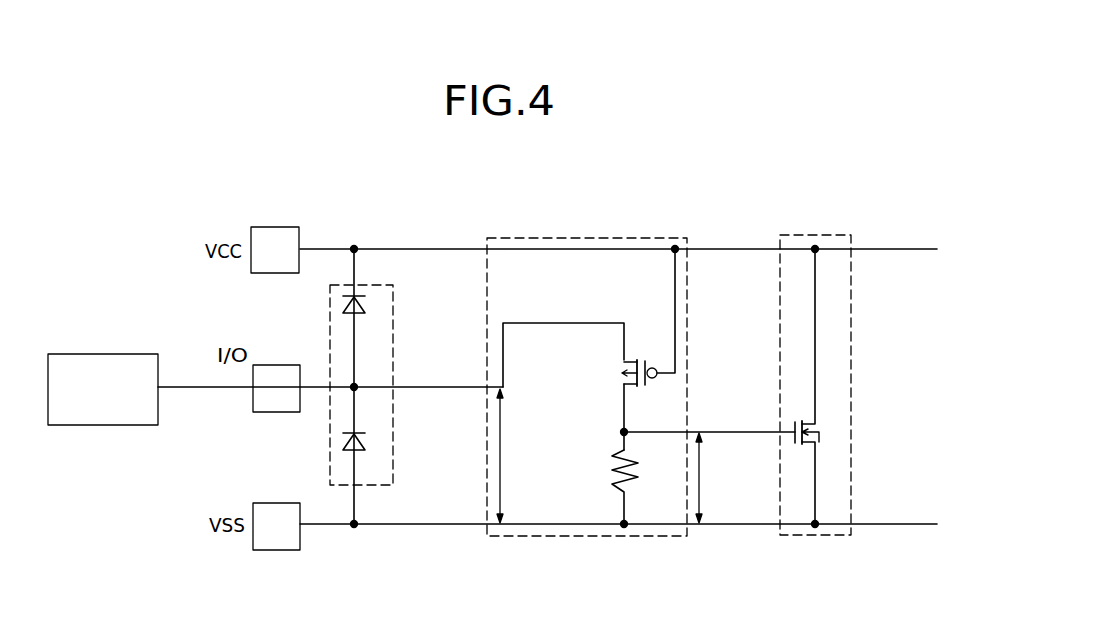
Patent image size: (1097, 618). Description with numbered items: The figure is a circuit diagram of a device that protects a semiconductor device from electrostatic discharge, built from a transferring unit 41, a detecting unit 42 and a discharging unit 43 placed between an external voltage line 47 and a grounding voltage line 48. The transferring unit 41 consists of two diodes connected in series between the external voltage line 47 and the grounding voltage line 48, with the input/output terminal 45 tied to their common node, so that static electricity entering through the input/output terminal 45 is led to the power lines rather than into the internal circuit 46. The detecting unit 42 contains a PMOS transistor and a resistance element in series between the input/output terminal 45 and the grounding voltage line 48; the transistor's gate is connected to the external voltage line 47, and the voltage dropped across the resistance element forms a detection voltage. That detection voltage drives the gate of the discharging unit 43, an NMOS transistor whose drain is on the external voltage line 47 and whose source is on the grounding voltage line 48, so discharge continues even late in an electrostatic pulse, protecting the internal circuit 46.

The transferring unit 41 is at (393, 302).
The detecting unit 42 is at (532, 237).
The discharging unit 43 is at (808, 233).
The input/output terminal 45 is at (266, 412).
The internal circuit 46 is at (128, 425).
The external voltage line 47 is at (320, 247).
The grounding voltage line 48 is at (325, 528).